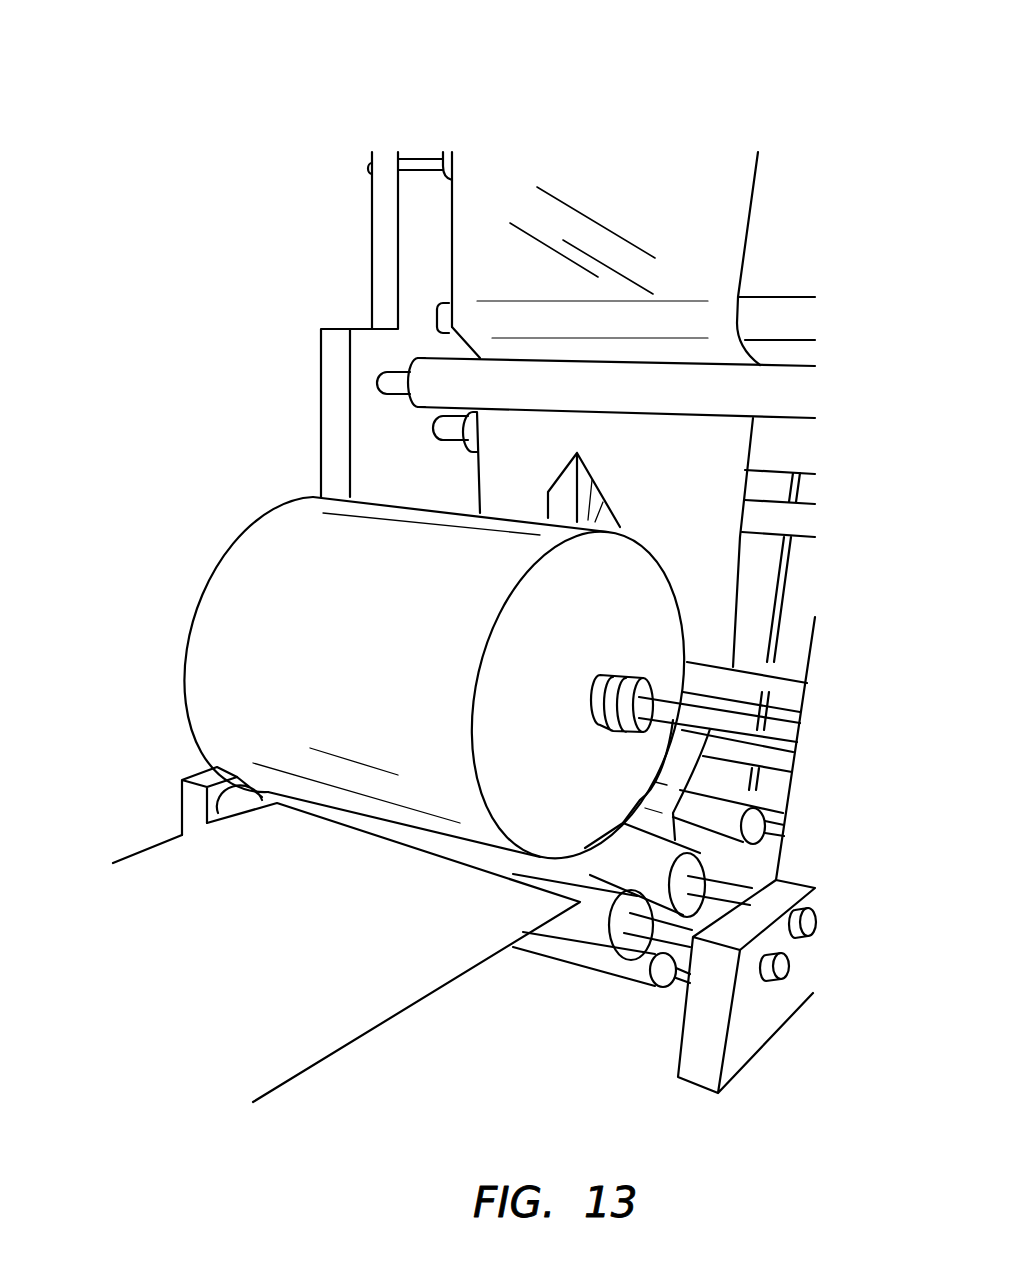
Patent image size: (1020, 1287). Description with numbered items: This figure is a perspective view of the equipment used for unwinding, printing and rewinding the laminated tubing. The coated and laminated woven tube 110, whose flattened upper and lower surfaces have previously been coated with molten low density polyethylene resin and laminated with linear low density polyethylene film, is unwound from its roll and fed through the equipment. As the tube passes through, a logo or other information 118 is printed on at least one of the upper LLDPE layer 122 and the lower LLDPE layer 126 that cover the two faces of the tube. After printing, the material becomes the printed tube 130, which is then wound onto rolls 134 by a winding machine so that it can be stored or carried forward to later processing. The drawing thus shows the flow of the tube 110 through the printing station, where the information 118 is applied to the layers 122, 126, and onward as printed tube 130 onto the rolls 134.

The coated and laminated woven tube 110 is at (487, 230).
The logo or other information 118 is at (557, 467).
The upper LLDPE layer 122 is at (583, 213).
The lower LLDPE layer 126 is at (748, 238).
The printed tube 130 is at (495, 485).
The rolls 134 is at (263, 627).